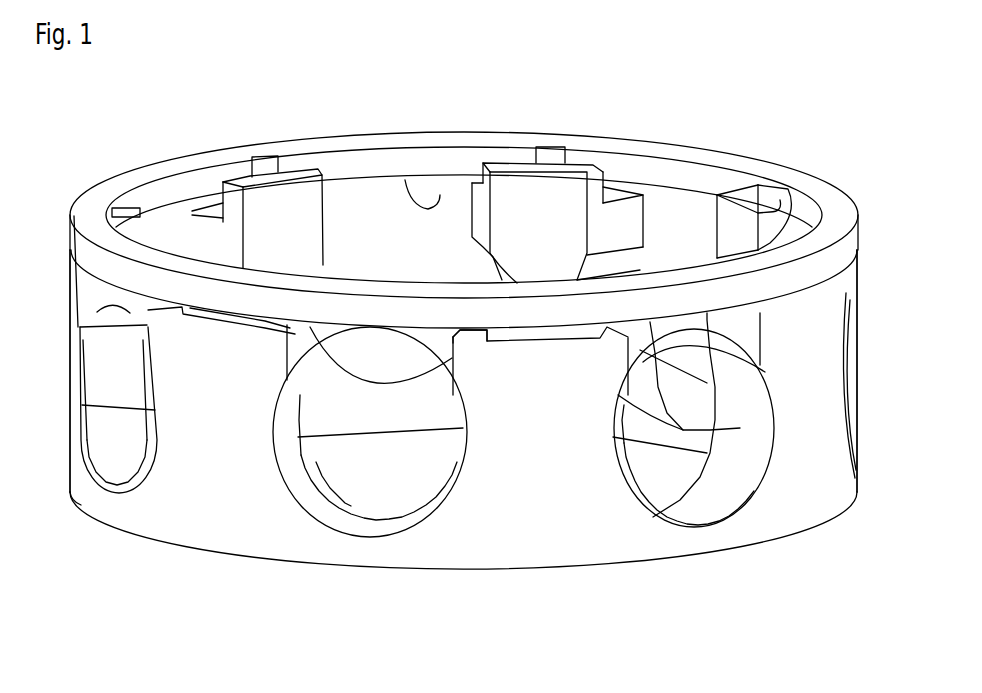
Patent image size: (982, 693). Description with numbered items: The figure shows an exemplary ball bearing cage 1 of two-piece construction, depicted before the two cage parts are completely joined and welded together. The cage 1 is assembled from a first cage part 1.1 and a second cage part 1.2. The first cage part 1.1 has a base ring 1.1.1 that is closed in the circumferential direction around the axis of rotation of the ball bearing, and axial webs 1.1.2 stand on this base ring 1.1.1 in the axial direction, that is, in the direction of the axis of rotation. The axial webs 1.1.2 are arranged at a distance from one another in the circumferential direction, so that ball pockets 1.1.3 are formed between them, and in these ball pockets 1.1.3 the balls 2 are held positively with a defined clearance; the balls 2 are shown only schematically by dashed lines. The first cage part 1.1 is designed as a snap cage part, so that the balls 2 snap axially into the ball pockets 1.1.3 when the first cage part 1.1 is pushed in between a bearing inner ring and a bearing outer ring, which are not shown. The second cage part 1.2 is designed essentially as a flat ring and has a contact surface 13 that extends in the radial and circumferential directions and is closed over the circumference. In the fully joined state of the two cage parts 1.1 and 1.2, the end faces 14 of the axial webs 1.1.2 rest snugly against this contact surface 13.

The cage 1 is at (812, 140).
The first cage part 1.1 is at (173, 482).
The base ring 1.1.1 is at (702, 535).
The axial webs 1.1.2 is at (237, 420).
The ball pockets 1.1.3 is at (374, 380).
The second cage part 1.2 is at (185, 168).
The contact surface 13 is at (406, 180).
The end faces 14 is at (468, 337).
The balls 2 is at (112, 303).